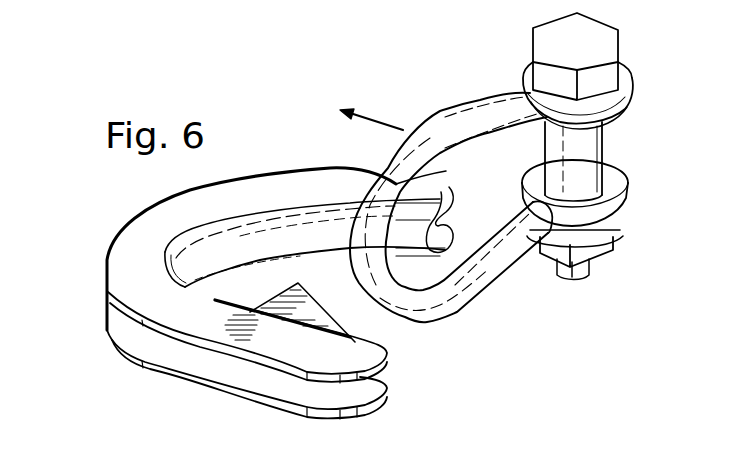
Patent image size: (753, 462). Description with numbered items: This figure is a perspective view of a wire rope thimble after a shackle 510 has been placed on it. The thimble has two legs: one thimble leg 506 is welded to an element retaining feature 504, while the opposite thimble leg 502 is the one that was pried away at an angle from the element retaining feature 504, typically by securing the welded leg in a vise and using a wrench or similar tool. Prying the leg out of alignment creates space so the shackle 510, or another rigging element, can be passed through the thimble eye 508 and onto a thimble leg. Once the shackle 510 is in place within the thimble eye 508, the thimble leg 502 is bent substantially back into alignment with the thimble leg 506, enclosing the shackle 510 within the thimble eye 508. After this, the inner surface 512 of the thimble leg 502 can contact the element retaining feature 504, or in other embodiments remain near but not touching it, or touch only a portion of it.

The thimble leg 502 is at (328, 187).
The element retaining feature 504 is at (297, 300).
The thimble leg 506 is at (350, 363).
The thimble eye 508 is at (211, 285).
The shackle 510 is at (460, 118).
The inner surface 512 is at (268, 240).